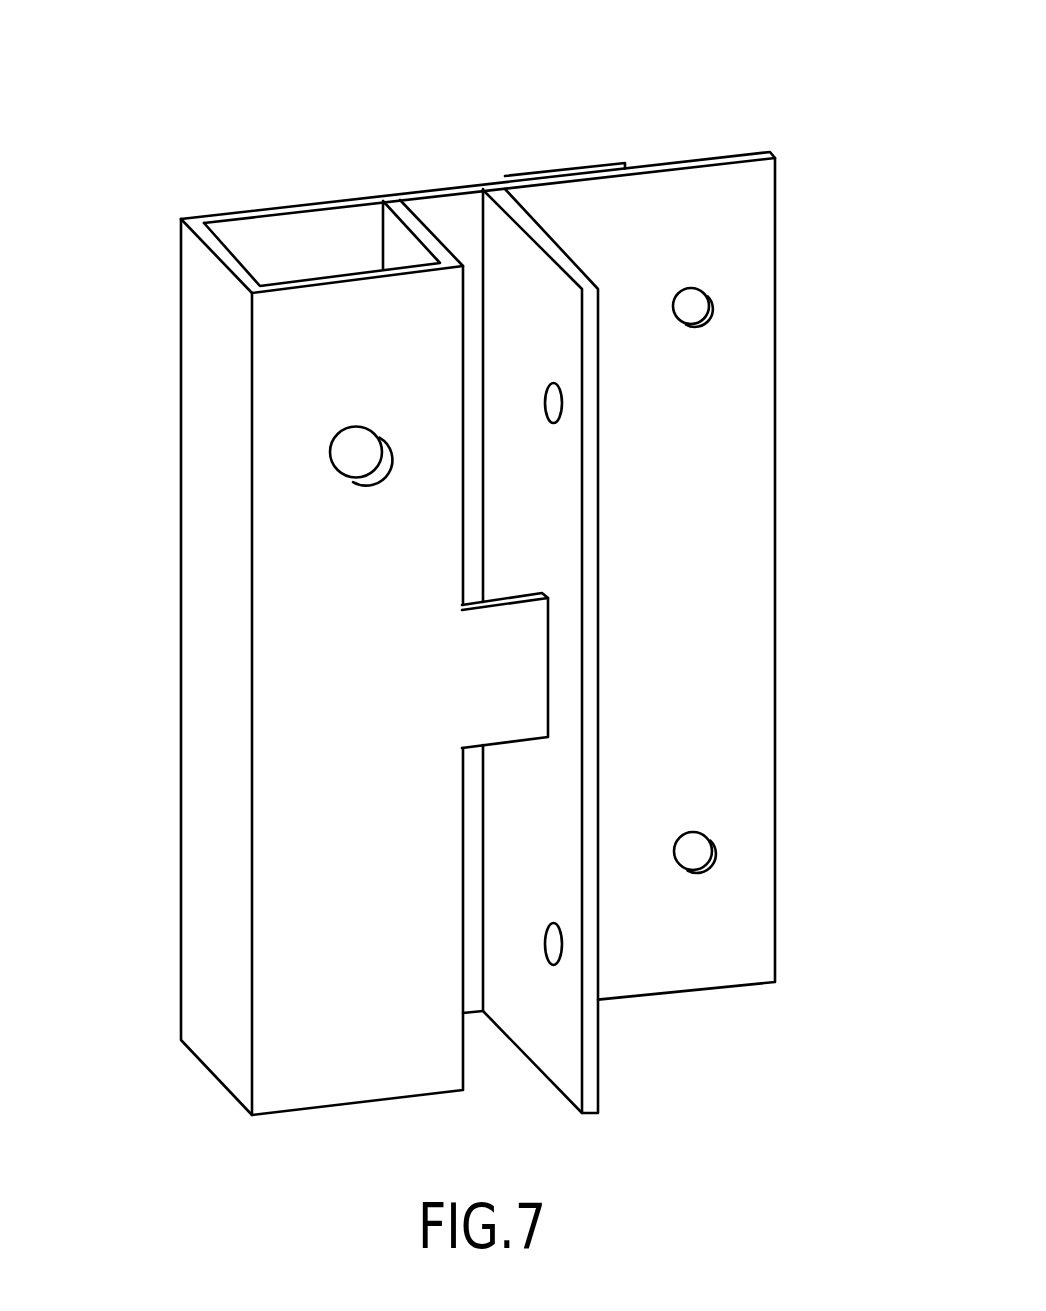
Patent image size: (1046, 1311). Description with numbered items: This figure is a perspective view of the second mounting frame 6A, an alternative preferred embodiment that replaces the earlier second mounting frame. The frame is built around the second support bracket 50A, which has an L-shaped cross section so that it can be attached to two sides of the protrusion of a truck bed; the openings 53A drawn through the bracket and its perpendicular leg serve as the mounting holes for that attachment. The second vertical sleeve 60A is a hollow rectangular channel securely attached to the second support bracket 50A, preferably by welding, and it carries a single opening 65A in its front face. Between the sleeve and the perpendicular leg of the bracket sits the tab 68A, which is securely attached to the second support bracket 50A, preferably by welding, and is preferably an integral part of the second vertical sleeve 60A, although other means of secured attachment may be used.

The second mounting frame 6A is at (527, 88).
The second support bracket 50A is at (775, 205).
The fastener holes 53A is at (556, 402).
The second vertical sleeve 60A is at (255, 630).
The hole 65A is at (352, 455).
The tab 68A is at (504, 686).